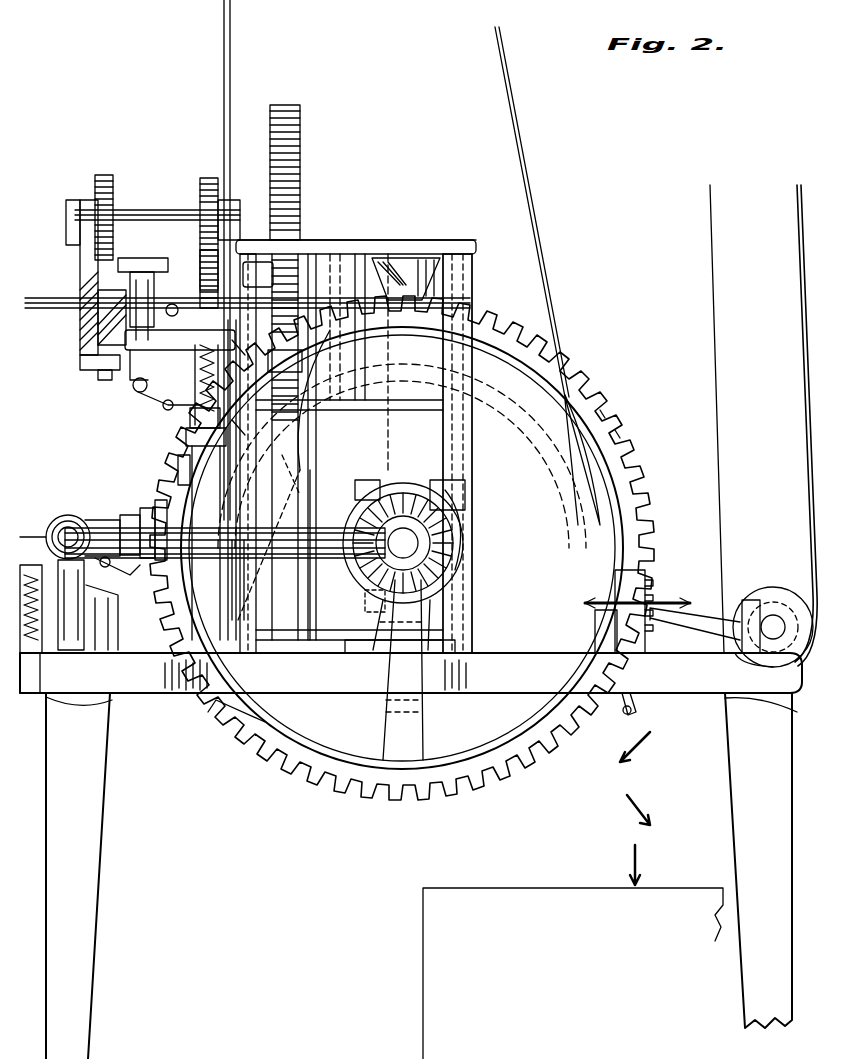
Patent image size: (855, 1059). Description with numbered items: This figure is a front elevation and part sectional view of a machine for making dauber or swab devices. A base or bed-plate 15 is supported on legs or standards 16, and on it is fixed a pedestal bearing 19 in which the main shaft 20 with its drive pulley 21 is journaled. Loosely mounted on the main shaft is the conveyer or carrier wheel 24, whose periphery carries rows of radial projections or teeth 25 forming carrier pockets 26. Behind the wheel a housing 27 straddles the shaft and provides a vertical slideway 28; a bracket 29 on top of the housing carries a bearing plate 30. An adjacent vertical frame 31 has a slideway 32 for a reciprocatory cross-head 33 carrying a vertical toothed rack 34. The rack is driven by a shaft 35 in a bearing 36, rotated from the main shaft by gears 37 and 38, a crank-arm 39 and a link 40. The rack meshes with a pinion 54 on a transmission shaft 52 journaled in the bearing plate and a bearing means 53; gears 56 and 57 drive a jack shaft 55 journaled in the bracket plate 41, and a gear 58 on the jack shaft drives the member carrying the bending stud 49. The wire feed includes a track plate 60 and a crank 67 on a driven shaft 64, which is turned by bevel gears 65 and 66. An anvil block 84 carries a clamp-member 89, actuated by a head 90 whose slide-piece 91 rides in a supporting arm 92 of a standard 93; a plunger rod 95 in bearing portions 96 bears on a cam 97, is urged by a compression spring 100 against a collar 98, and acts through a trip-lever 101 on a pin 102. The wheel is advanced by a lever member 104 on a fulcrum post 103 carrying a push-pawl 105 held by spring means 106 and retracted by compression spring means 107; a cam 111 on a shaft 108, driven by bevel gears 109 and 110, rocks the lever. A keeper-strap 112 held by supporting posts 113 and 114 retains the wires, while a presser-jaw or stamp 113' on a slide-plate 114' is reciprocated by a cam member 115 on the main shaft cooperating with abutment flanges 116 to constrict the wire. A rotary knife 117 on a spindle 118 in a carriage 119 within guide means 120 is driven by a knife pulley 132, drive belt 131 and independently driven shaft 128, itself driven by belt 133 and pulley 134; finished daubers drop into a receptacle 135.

The base or bed-plate 15 is at (500, 653).
The legs or standards 16 is at (95, 815).
The pedestal bearing 19 is at (430, 630).
The main shaft 20 is at (430, 543).
The drive pulley 21 is at (498, 400).
The conveyer or carrier wheel 24 is at (615, 440).
The radial projections or teeth 25 is at (603, 410).
The carrier pockets 26 is at (580, 375).
The housing 27 is at (470, 272).
The vertical slideway 28 is at (480, 330).
The bracket 29 is at (310, 240).
The bearing plate 30 is at (205, 270).
The vertical frame 31 is at (360, 370).
The slideway 32 is at (320, 425).
The reciprocatory cross-head 33 is at (300, 385).
The vertical toothed rack 34 is at (300, 170).
The shaft 35 is at (285, 528).
The bearing 36 is at (226, 710).
The gear 37 is at (370, 478).
The gear 38 is at (330, 470).
The crank-arm 39 is at (292, 458).
The link 40 is at (317, 400).
The bracket plate 41 is at (80, 280).
The bending stud 49 is at (237, 480).
The transmission shaft 52 is at (336, 254).
The bearing means 53 is at (362, 254).
The pinion 54 is at (290, 300).
The jack shaft 55 is at (145, 212).
The gear 56 is at (200, 282).
The gear 57 is at (200, 190).
The gear 58 is at (108, 177).
The track plate 60 is at (95, 318).
The driven shaft 64 is at (250, 590).
The bevel gear 65 is at (450, 520).
The bevel gear 66 is at (386, 594).
The crank 67 is at (125, 515).
The anvil block 84 is at (95, 360).
The clamp-member 89 is at (148, 272).
The vertically reciprocable head 90 is at (138, 258).
The slide-piece 91 is at (130, 365).
The supporting arm 92 is at (170, 338).
The standard 93 is at (186, 437).
The plunger rod 95 is at (178, 465).
The bearing portions 96 is at (238, 387).
The cam 97 is at (232, 575).
The collar 98 is at (190, 418).
The compression spring 100 is at (195, 360).
The trip-lever 101 is at (160, 405).
The pin 102 is at (135, 392).
The fulcrum post 103 is at (108, 620).
The lever member 104 is at (110, 598).
The push-pawl 105 is at (140, 520).
The spring means 106 is at (130, 575).
The compression spring means 107 is at (70, 650).
The shaft 108 is at (66, 515).
The bevel gear 109 is at (95, 520).
The bevel gear 110 is at (38, 506).
The cam 111 is at (50, 520).
The keeper-strap 112 is at (258, 269).
The supporting post 113 is at (174, 299).
The presser-jaw or stamp 113' is at (412, 253).
The supporting post 114 is at (648, 707).
The slide-plate 114' is at (468, 269).
The bearing 115 is at (460, 485).
The abutment flanges 116 is at (465, 470).
The rotary cutting blade or knife 117 is at (668, 600).
The spindle 118 is at (650, 585).
The movable carriage 119 is at (742, 610).
The guide means 120 is at (700, 653).
The independently driven shaft 128 is at (773, 615).
The drive belt 131 is at (735, 605).
The knife pulley 132 is at (596, 631).
The belt 133 is at (722, 480).
The pulley 134 is at (790, 605).
The receptacle 135 is at (685, 888).